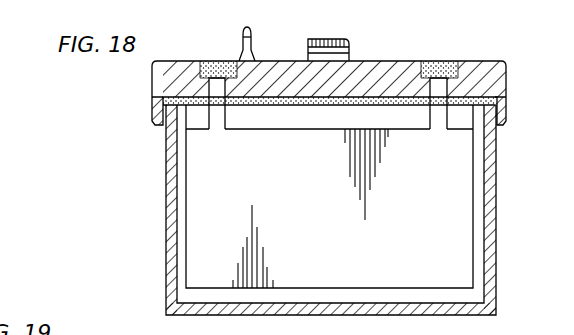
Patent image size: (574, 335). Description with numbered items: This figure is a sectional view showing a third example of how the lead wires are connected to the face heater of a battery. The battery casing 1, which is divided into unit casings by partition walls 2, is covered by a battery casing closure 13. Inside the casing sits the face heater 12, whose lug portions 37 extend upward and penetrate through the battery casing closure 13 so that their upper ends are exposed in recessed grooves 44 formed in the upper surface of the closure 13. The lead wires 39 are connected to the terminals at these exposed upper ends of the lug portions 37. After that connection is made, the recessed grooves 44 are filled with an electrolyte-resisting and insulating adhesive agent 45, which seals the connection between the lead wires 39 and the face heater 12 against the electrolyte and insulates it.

The battery casing 1 is at (166, 191).
The partition wall 2 is at (177, 162).
The face heater 12 is at (178, 226).
The battery casing closure 13 is at (389, 67).
The lug portion 37 is at (433, 118).
The lead wire 39 is at (210, 64).
The recessed groove 44 is at (233, 84).
The electrolyte-resisting and insulating adhesive agent 45 is at (225, 62).